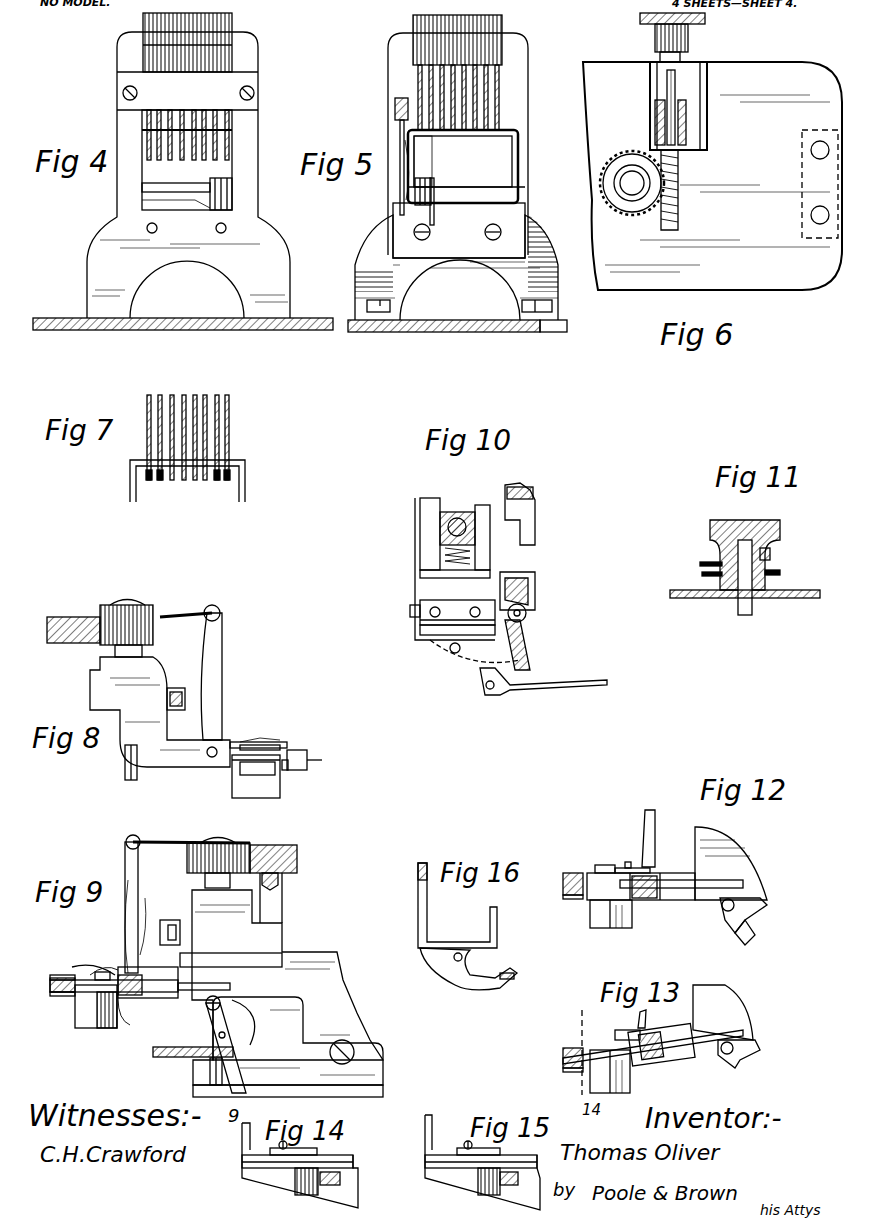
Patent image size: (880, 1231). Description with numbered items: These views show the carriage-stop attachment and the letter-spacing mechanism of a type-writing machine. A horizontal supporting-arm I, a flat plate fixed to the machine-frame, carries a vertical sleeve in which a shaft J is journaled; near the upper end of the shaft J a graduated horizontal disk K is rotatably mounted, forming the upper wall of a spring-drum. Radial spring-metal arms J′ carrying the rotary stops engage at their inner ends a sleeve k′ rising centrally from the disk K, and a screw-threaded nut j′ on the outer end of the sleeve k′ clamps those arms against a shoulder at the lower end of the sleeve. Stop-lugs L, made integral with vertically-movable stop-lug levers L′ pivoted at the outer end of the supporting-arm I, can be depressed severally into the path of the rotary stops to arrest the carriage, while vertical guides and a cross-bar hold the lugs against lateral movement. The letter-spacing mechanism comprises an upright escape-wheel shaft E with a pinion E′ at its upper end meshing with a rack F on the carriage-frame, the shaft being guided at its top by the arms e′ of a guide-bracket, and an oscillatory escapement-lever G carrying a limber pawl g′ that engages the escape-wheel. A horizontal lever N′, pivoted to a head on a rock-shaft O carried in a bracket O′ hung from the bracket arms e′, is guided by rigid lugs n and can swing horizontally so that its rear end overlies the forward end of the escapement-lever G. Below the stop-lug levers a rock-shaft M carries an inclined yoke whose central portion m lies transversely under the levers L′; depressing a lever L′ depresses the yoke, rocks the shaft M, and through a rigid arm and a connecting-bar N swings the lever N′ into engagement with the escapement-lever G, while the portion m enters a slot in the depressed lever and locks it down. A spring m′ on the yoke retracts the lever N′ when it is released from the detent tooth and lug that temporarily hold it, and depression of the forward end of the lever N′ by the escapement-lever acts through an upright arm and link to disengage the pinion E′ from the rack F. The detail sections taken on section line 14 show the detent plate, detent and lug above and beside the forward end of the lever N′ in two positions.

In FIG. 4, the supporting-arm I is at (300, 330).
In FIG. 5, the supporting-arm I is at (424, 332).
In FIG. 6, the supporting-arm I is at (712, 176).
In FIG. 4, the stop-lugs L is at (143, 22).
In FIG. 5, the stop-lugs L is at (413, 20).
In FIG. 4, the stop-lug levers L′ is at (172, 160).
In FIG. 5, the stop-lug levers L′ is at (480, 108).
In FIG. 7, the stop-lug levers L′ is at (172, 395).
In FIG. 4, the rock-shaft M is at (142, 188).
In FIG. 5, the rock-shaft M is at (470, 190).
In FIG. 5, the central portion of yoke m is at (478, 138).
In FIG. 7, the central portion of yoke m is at (184, 480).
In FIG. 4, the spring m′ is at (212, 182).
In FIG. 5, the spring m′ is at (440, 175).
In FIG. 6, the shaft J is at (664, 220).
In FIG. 11, the shaft J is at (738, 612).
In FIG. 10, the escape-wheel shaft E is at (455, 515).
In FIG. 8, the escape-wheel shaft E is at (125, 762).
In FIG. 9, the escape-wheel shaft E is at (210, 1072).
In FIG. 8, the pinion E′ is at (135, 610).
In FIG. 9, the pinion E′ is at (240, 845).
In FIG. 10, the guide-bracket arms e′ is at (483, 505).
In FIG. 8, the rack F is at (60, 617).
In FIG. 9, the rack F is at (285, 845).
In FIG. 10, the escapement-lever G is at (530, 490).
In FIG. 9, the escapement-lever G is at (315, 1055).
In FIG. 12, the escapement-lever G is at (760, 912).
In FIG. 13, the escapement-lever G is at (740, 1060).
In FIG. 9, the limber pawl g′ is at (240, 1040).
In FIG. 12, the limber pawl g′ is at (735, 933).
In FIG. 10, the guide-lugs n is at (530, 580).
In FIG. 9, the guide-lugs n is at (172, 992).
In FIG. 12, the guide-lugs n is at (692, 900).
In FIG. 13, the guide-lugs n is at (690, 1058).
In FIG. 10, the connecting-bar N is at (590, 680).
In FIG. 8, the connecting-bar N is at (312, 760).
In FIG. 9, the connecting-bar N is at (55, 992).
In FIG. 12, the connecting-bar N is at (563, 880).
In FIG. 13, the connecting-bar N is at (563, 1055).
In FIG. 10, the horizontal lever N′ is at (525, 640).
In FIG. 8, the horizontal lever N′ is at (282, 770).
In FIG. 9, the horizontal lever N′ is at (75, 996).
In FIG. 12, the horizontal lever N′ is at (565, 897).
In FIG. 13, the horizontal lever N′ is at (563, 1065).
In FIG. 14, the horizontal lever N′ is at (305, 1195).
In FIG. 15, the horizontal lever N′ is at (480, 1192).
In FIG. 10, the rock-shaft O is at (410, 612).
In FIG. 8, the rock-shaft O is at (210, 757).
In FIG. 9, the rock-shaft O is at (104, 967).
In FIG. 12, the rock-shaft O is at (629, 858).
In FIG. 14, the rock-shaft O is at (282, 1138).
In FIG. 15, the rock-shaft O is at (467, 1138).
In FIG. 10, the bracket O′ is at (418, 630).
In FIG. 8, the bracket O′ is at (160, 768).
In FIG. 9, the bracket O′ is at (150, 975).
In FIG. 12, the bracket O′ is at (705, 833).
In FIG. 16, the bracket O′ is at (420, 898).
In FIG. 14, the bracket O′ is at (353, 1164).
In FIG. 15, the bracket O′ is at (537, 1162).
In FIG. 11, the screw-threaded nut j′ is at (712, 522).
In FIG. 11, the radial arms J′ is at (700, 564).
In FIG. 11, the sleeve k′ is at (770, 550).
In FIG. 11, the horizontal disk K is at (670, 593).
In FIG. 13, the section line 14 is at (588, 1055).